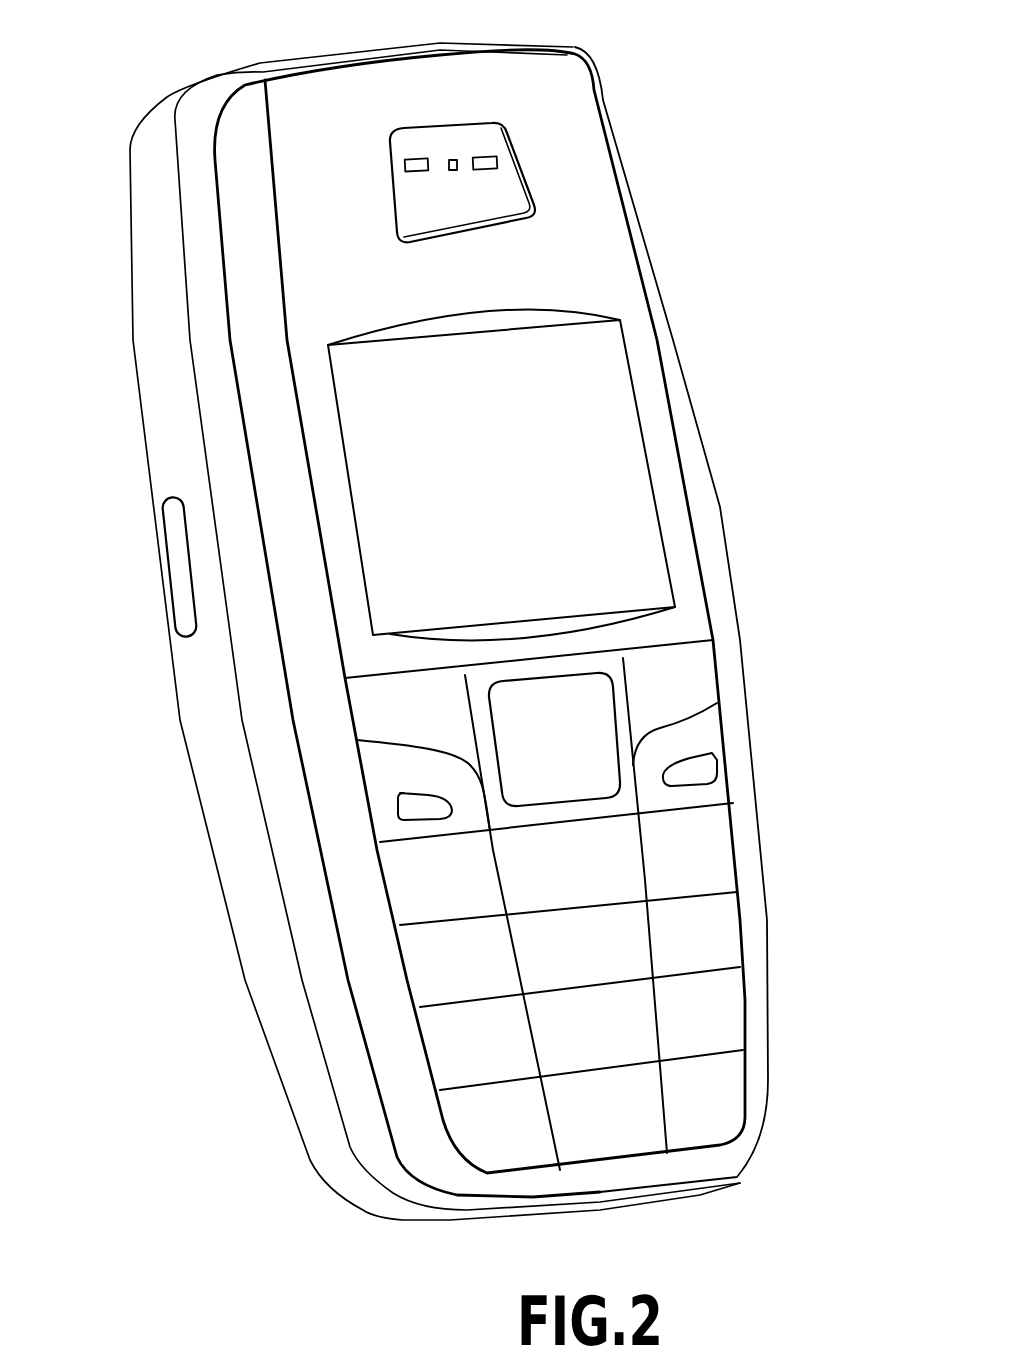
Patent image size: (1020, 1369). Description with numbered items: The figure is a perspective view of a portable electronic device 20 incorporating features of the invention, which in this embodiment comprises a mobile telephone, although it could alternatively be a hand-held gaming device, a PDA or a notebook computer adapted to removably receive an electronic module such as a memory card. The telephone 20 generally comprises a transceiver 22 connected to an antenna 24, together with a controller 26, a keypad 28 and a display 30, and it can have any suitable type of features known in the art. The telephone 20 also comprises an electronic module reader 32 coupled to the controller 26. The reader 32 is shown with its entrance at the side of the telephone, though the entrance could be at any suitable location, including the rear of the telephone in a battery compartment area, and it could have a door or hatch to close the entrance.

The portable electronic device 20 is at (126, 36).
The transceiver 22 is at (565, 235).
The antenna 24 is at (566, 90).
The controller 26 is at (582, 733).
The keypad 28 is at (722, 907).
The display 30 is at (617, 378).
The electronic module reader 32 is at (177, 570).